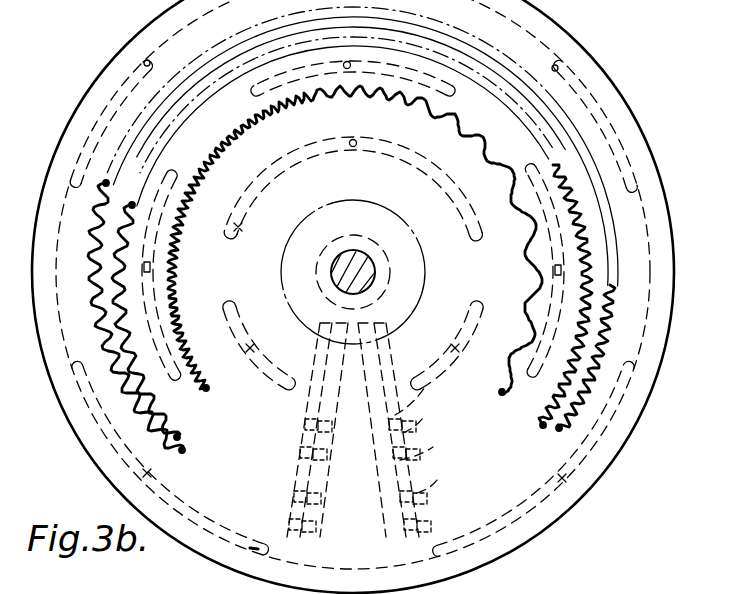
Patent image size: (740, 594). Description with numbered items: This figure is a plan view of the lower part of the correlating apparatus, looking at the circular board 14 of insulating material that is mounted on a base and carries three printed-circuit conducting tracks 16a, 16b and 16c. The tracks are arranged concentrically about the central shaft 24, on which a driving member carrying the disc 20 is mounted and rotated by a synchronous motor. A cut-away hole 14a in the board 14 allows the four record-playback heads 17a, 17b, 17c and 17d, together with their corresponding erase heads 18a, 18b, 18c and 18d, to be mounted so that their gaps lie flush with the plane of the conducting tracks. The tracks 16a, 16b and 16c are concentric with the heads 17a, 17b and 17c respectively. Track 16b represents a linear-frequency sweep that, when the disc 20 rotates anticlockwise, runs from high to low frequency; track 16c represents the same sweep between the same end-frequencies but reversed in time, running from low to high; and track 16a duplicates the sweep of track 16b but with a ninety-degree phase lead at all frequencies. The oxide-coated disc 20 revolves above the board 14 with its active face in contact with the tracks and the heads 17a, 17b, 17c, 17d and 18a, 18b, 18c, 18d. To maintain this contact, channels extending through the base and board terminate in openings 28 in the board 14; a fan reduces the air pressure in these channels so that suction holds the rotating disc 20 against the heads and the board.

The circular board 14 is at (597, 481).
The cut-away hole 14a is at (370, 527).
The conducting track 16a is at (181, 451).
The conducting track 16b is at (177, 437).
The conducting track 16c is at (208, 390).
The record-playback head 17a is at (443, 484).
The record-playback head 17b is at (433, 452).
The record-playback head 17c is at (432, 423).
The record-playback head 17d is at (427, 399).
The erase head 18a is at (289, 523).
The erase head 18b is at (294, 496).
The erase head 18c is at (300, 455).
The erase head 18d is at (305, 425).
The disc 20 is at (604, 460).
The shaft 24 is at (373, 268).
The openings 28 is at (240, 230).